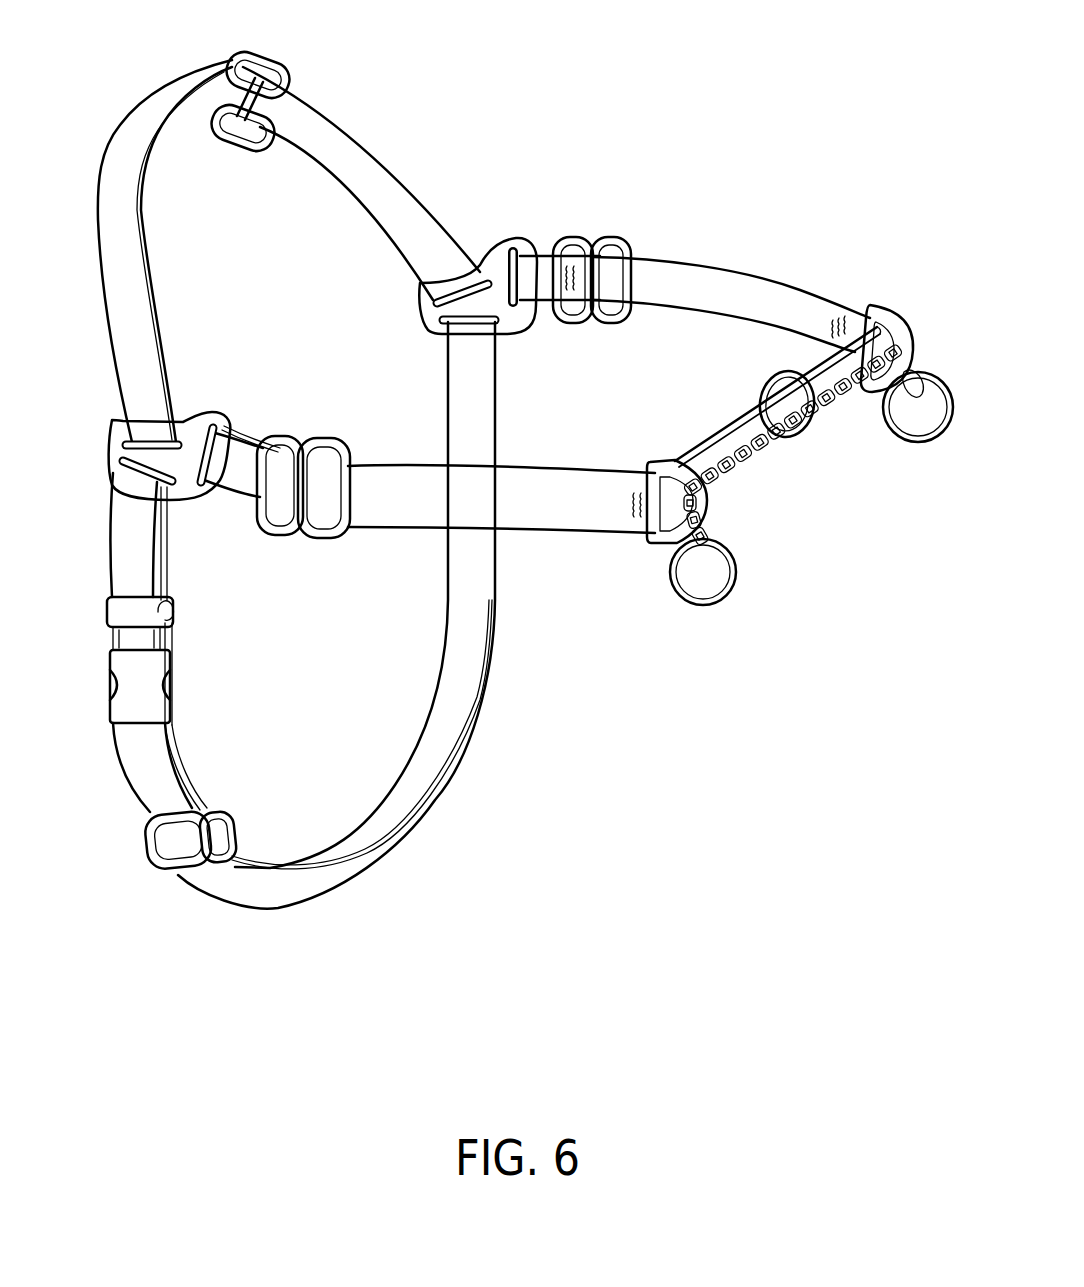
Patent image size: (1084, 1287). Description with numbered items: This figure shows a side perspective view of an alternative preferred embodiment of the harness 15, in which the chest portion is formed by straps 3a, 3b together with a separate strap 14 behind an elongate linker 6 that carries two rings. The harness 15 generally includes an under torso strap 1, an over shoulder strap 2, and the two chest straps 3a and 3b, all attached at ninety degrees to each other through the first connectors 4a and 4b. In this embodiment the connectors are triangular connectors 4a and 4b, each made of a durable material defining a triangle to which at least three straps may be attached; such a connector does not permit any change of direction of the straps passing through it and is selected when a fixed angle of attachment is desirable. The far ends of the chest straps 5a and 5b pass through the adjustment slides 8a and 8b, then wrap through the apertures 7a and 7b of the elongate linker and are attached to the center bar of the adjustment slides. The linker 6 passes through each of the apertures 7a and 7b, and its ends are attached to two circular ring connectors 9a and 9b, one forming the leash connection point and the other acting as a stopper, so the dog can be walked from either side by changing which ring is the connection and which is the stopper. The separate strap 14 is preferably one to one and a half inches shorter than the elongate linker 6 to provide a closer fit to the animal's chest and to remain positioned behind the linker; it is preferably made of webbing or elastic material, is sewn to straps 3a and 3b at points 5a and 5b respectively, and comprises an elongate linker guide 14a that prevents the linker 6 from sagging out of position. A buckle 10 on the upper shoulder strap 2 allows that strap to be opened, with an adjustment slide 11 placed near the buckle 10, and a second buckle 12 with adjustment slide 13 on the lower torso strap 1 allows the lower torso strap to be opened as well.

The under torso strap 1 is at (425, 824).
The over shoulder strap 2 is at (128, 121).
The chest strap 3a is at (658, 258).
The chest strap 3b is at (379, 466).
The triangular connector 4a is at (493, 240).
The triangular connector 4b is at (112, 444).
The far end of chest strap 5a is at (836, 306).
The far end of chest strap 5b is at (602, 535).
The elongate linker 6 is at (767, 440).
The aperture of elongate linker 7a is at (885, 312).
The aperture of elongate linker 7b is at (652, 458).
The adjustment slide 8a is at (603, 238).
The adjustment slide 8b is at (318, 438).
The circular ring connector 9a is at (928, 375).
The circular ring connector 9b is at (734, 604).
The buckle 10 is at (118, 227).
The adjustment slide 11 is at (250, 58).
The second buckle 12 is at (172, 663).
The adjustment slide 13 is at (234, 812).
The separate strap 14 is at (812, 359).
The elongate linker guide 14a is at (808, 430).
The harness 15 is at (596, 706).